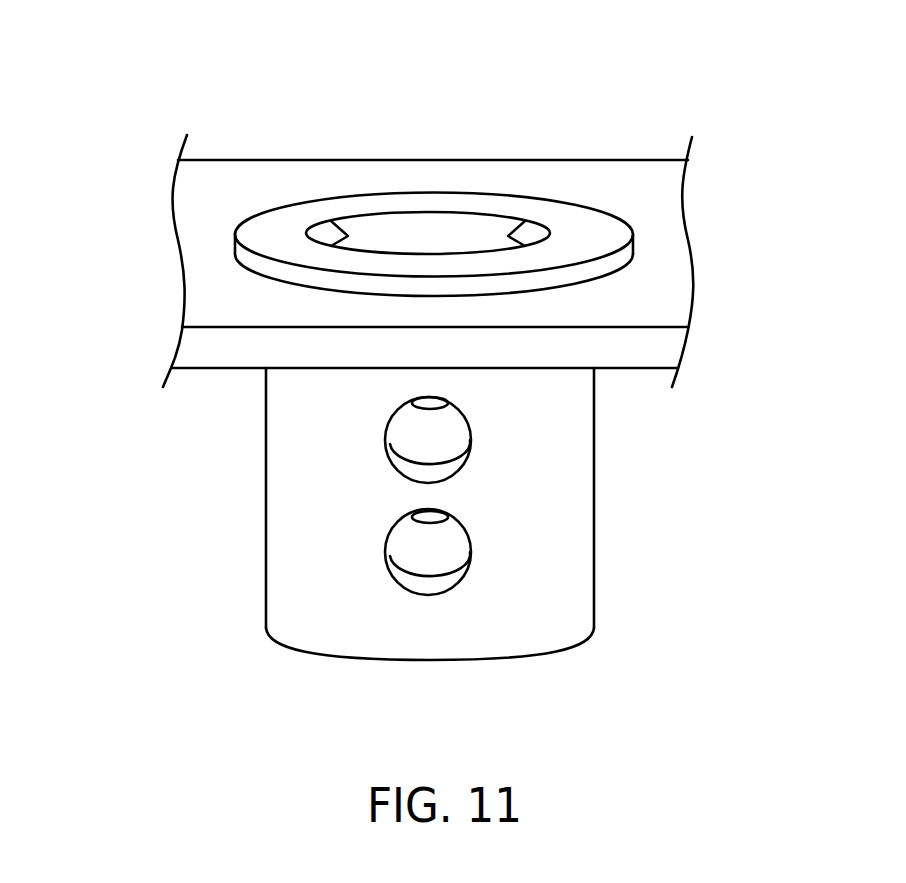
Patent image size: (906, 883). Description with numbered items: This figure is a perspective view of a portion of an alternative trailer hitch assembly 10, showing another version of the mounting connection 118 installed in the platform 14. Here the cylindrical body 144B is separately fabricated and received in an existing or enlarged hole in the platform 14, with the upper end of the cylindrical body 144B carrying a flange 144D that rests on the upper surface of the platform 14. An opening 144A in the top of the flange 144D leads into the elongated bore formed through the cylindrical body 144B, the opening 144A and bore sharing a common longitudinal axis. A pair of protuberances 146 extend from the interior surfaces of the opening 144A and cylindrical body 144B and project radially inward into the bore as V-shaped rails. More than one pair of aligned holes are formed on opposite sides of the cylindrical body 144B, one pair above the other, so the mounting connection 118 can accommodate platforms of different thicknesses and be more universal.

The trailer hitch assembly 10 is at (177, 73).
The platform 14 is at (638, 197).
The mounting connection 118 is at (433, 184).
The opening 144A is at (413, 227).
The cylindrical body 144B is at (568, 477).
The flange 144D is at (270, 228).
The protuberances 146 is at (336, 228).